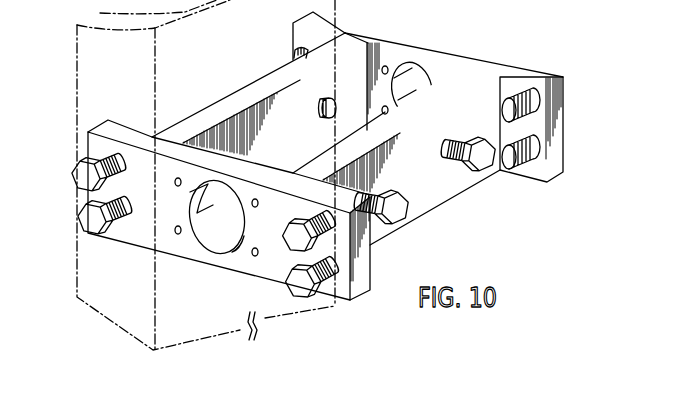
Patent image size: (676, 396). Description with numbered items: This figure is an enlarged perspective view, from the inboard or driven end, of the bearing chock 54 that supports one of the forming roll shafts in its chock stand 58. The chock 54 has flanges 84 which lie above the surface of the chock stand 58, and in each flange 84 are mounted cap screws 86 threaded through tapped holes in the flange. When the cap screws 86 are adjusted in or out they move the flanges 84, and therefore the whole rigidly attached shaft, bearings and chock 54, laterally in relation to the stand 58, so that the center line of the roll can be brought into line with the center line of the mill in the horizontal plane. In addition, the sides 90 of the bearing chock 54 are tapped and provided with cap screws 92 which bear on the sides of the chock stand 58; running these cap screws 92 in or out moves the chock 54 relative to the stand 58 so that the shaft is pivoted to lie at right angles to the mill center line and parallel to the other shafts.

The bearing chock 54 is at (268, 272).
The chock stand 58 is at (233, 58).
The flange 84 is at (139, 236).
The cap screw 86 is at (80, 223).
The side of bearing chock 90 is at (295, 136).
The cap screw 92 is at (333, 108).